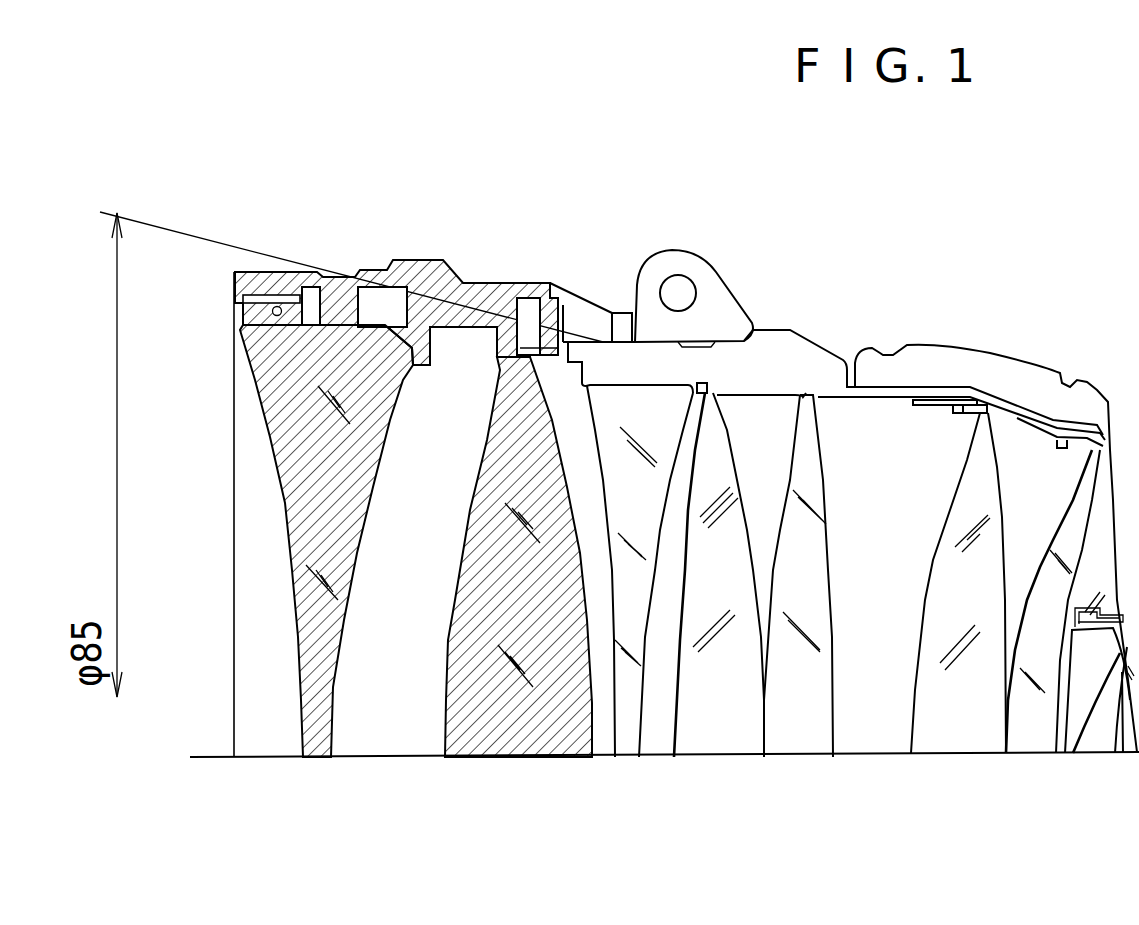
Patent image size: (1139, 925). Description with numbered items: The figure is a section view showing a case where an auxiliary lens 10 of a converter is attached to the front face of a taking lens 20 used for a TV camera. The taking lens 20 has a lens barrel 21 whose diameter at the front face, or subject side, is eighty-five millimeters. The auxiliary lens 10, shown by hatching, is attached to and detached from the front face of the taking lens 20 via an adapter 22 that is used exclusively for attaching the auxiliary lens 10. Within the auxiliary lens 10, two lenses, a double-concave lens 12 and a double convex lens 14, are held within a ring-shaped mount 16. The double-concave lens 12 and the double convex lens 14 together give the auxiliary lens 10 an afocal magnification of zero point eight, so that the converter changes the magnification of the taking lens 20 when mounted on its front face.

The auxiliary lens 10 is at (378, 178).
The double-concave lens 12 is at (330, 712).
The double convex lens 14 is at (518, 715).
The ring-shaped mount 16 is at (284, 274).
The taking lens 20 is at (931, 302).
The lens barrel 21 is at (768, 348).
The adapter 22 is at (652, 272).